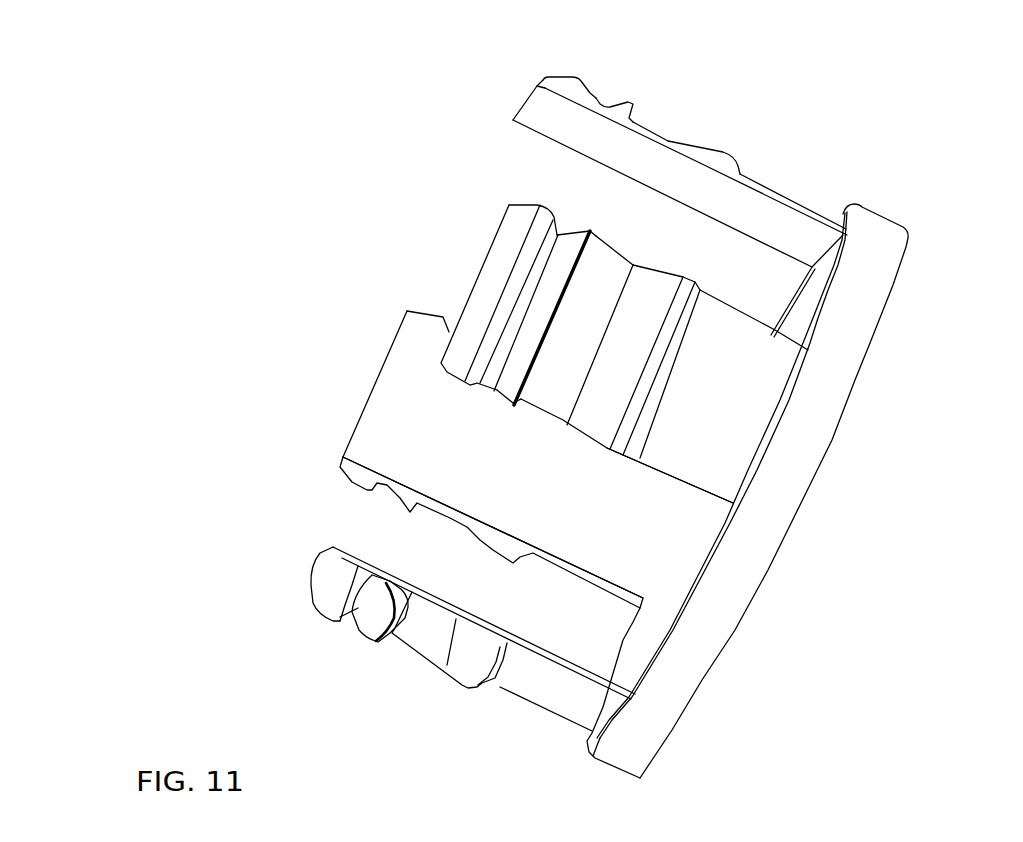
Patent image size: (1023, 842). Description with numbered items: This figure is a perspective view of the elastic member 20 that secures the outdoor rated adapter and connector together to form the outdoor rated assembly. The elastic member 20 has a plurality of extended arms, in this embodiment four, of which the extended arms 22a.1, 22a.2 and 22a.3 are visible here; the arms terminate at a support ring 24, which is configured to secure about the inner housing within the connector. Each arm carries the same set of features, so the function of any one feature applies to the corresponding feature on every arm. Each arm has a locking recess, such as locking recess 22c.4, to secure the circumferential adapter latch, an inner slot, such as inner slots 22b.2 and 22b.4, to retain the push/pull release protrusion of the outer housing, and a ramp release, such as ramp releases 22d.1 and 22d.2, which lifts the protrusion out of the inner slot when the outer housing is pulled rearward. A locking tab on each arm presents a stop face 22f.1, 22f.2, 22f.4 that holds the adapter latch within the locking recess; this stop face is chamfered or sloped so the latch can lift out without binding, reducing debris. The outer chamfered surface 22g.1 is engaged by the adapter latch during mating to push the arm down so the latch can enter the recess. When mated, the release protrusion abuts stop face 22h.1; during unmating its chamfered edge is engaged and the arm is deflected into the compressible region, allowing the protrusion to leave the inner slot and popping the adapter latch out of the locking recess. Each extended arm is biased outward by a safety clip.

The elastic member 20 is at (170, 83).
The support ring 24 is at (848, 349).
The extended arm 22a.1 is at (523, 105).
The stop face 22f.1 is at (542, 62).
The outer chamfered surface 22g.1 is at (606, 93).
The ramp release 22d.1 is at (730, 149).
The extended arm 22a.3 is at (538, 498).
The extended arm 22a.2 is at (707, 390).
The stop face 22f.2 is at (478, 281).
The stop face 22h.1 is at (607, 245).
The inner slot 22b.2 is at (590, 330).
The ramp release 22d.2 is at (646, 328).
The inner slot 22b.4 is at (423, 638).
The stop face 22f.4 is at (318, 584).
The locking recess 22c.4 is at (356, 622).